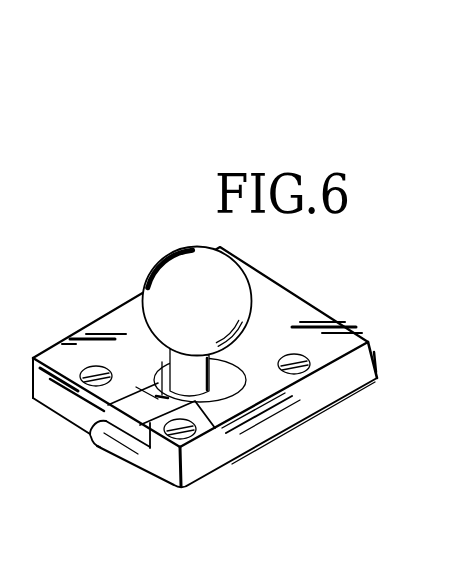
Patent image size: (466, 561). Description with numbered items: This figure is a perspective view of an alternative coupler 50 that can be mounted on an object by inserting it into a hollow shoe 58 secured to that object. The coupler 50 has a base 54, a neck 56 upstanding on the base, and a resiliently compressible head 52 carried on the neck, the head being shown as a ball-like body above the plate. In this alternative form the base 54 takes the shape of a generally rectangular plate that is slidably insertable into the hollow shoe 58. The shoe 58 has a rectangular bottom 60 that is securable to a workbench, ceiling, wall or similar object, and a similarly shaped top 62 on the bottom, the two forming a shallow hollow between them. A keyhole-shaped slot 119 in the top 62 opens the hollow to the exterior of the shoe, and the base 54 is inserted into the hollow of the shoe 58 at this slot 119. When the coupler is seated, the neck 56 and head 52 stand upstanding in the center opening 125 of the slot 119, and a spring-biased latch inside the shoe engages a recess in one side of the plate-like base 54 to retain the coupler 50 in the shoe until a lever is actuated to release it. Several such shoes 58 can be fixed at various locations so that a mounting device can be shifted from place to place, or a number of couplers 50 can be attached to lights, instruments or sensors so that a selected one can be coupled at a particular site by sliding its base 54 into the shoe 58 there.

The alternative coupler 50 is at (221, 348).
The resiliently compressible head 52 is at (210, 307).
The base 54 is at (116, 430).
The neck 56 is at (236, 368).
The hollow shoe 58 is at (117, 300).
The rectangular bottom 60 is at (139, 458).
The top 62 is at (131, 366).
The keyhole-shaped slot 119 is at (210, 422).
The center opening 125 is at (236, 384).